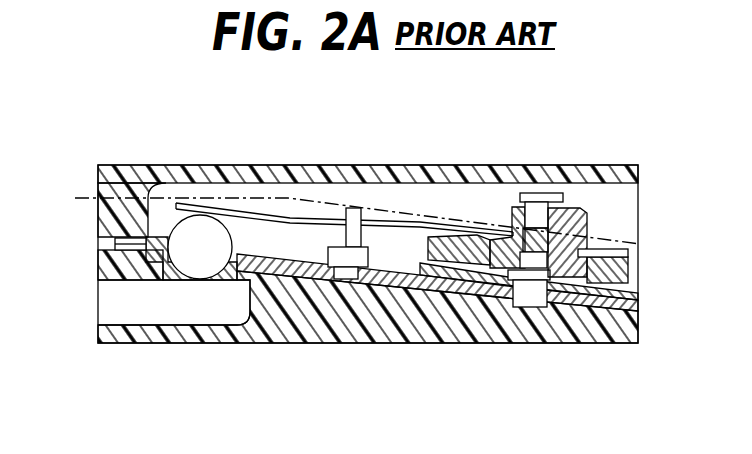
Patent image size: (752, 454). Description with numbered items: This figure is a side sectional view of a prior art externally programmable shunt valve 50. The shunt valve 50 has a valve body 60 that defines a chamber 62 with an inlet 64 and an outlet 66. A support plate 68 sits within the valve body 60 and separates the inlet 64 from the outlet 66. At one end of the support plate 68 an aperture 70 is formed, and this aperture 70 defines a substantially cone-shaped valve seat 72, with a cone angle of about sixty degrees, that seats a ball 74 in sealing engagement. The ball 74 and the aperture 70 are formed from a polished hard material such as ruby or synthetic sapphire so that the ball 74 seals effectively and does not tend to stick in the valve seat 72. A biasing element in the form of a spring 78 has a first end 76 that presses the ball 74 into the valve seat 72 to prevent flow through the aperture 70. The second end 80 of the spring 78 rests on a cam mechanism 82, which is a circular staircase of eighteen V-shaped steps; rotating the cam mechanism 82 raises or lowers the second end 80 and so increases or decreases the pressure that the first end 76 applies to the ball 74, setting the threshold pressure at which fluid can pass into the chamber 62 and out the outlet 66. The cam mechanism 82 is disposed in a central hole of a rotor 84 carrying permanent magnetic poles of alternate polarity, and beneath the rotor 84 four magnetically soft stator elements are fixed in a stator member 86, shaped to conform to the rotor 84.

The shunt valve 50 is at (90, 95).
The valve body 60 is at (355, 333).
The chamber 62 is at (617, 203).
The inlet 64 is at (110, 300).
The outlet 66 is at (632, 257).
The support plate 68 is at (492, 298).
The aperture 70 is at (117, 241).
The valve seat 72 is at (216, 272).
The ball 74 is at (206, 232).
The first end of spring 76 is at (184, 205).
The spring 78 is at (335, 210).
The second end of spring 80 is at (492, 217).
The cam mechanism 82 is at (584, 207).
The rotor 84 is at (630, 275).
The stator member 86 is at (462, 278).